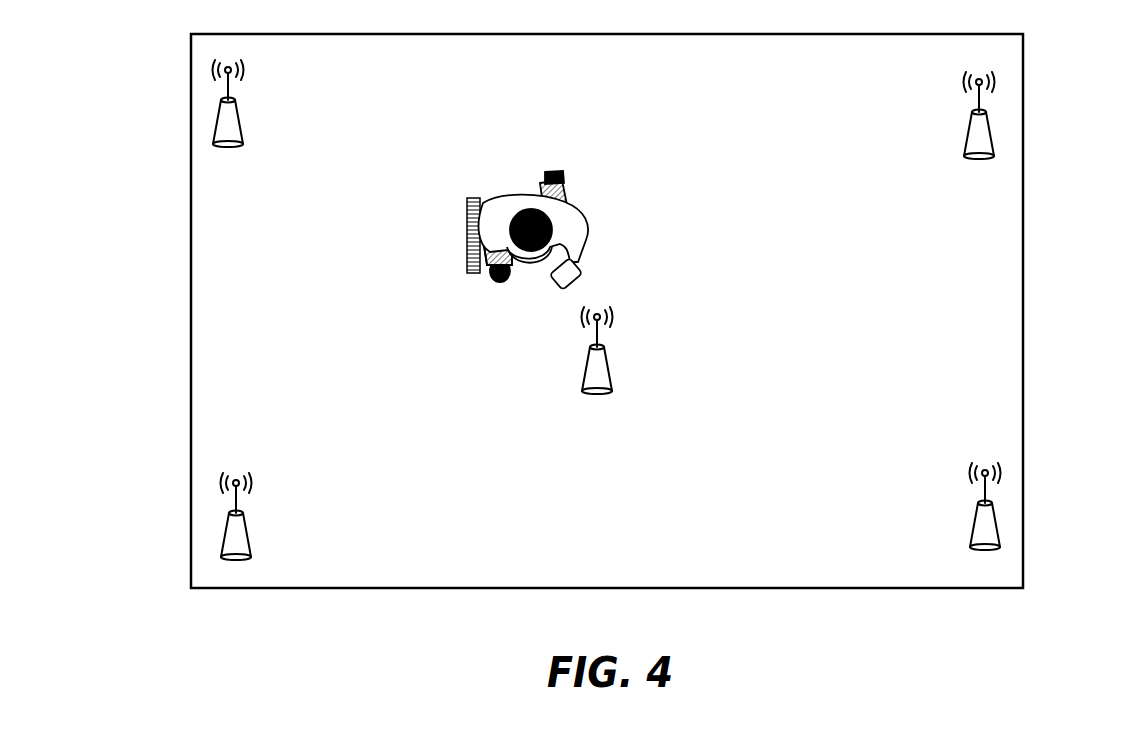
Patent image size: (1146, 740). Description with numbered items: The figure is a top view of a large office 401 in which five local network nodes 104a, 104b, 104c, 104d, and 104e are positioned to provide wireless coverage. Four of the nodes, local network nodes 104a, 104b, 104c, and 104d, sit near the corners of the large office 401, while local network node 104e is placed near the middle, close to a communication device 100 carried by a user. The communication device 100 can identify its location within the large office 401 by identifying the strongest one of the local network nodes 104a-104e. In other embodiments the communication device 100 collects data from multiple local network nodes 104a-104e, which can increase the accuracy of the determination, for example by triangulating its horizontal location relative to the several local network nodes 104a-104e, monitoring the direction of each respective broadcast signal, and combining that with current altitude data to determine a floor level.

The large office 401 is at (1025, 302).
The communication device 100 is at (568, 291).
The local network node 104a is at (215, 140).
The local network node 104b is at (222, 555).
The local network node 104c is at (996, 527).
The local network node 104d is at (992, 135).
The local network node 104e is at (612, 376).